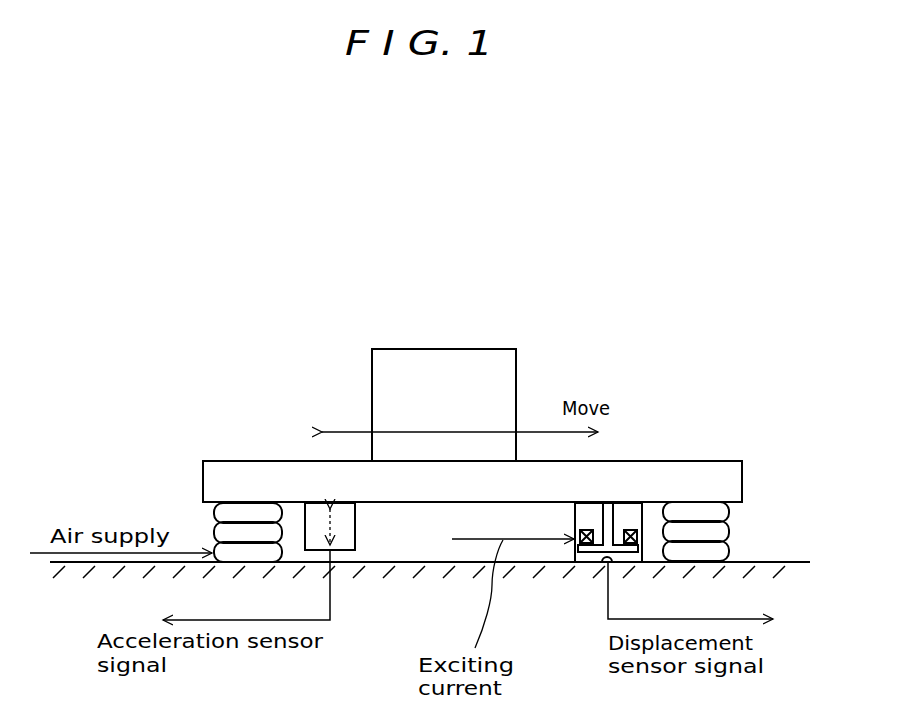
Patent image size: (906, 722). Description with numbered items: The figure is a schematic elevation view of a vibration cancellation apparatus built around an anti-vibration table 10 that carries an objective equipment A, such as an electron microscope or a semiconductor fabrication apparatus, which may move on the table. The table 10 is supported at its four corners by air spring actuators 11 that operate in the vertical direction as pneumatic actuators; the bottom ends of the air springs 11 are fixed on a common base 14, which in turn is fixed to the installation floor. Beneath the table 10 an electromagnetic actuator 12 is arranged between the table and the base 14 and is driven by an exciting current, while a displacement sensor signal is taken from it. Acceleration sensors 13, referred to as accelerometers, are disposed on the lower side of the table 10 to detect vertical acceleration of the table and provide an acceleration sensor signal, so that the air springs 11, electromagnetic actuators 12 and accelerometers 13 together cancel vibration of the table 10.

The objective equipment A is at (443, 349).
The anti-vibration table 10 is at (673, 461).
The air spring actuator 11 is at (729, 520).
The electromagnetic actuator 12 is at (575, 518).
The acceleration sensor 13 is at (355, 540).
The common base 14 is at (773, 562).